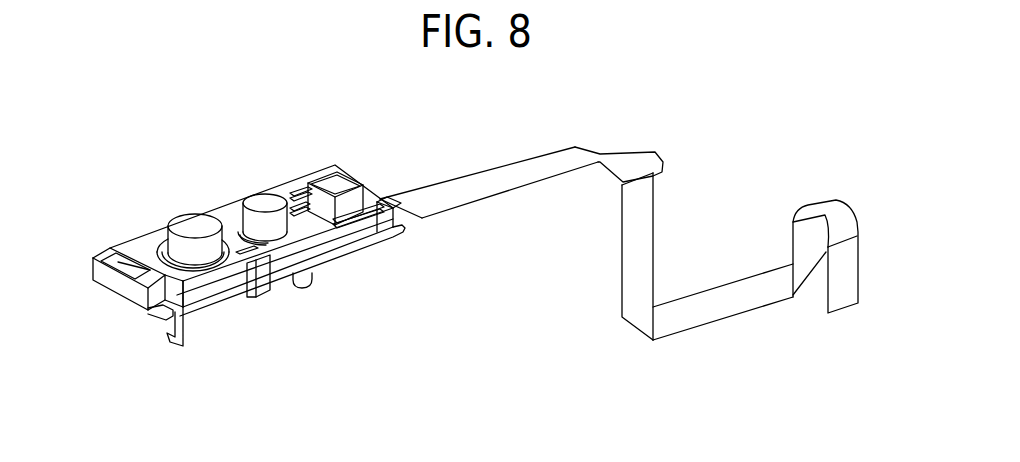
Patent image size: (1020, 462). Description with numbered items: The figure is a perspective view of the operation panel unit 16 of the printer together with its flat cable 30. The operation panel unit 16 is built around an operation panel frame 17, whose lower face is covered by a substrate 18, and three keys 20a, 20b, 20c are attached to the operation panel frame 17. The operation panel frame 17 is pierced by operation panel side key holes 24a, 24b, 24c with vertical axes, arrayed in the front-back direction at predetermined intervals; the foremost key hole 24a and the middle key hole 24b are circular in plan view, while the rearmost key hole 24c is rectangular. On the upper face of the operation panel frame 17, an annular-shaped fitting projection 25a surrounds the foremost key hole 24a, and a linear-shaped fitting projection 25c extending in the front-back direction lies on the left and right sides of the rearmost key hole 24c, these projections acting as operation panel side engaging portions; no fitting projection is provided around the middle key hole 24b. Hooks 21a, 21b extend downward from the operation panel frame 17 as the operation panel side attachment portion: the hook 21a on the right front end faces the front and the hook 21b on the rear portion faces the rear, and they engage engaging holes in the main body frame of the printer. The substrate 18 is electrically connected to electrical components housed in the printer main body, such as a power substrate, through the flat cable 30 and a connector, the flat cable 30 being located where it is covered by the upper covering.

The operation panel unit 16 is at (361, 159).
The operation panel frame 17 is at (225, 220).
The substrate 18 is at (355, 262).
The key 20a is at (190, 220).
The key 20b is at (267, 204).
The key 20c is at (345, 178).
The hook 21a is at (172, 347).
The hook 21b is at (302, 292).
The operation panel side key hole 24a is at (187, 257).
The operation panel side key hole 24b is at (255, 210).
The operation panel side key hole 24c is at (299, 188).
The annular-shaped fitting projection 25a is at (207, 278).
The linear-shaped fitting projection 25c is at (302, 190).
The flat cable 30 is at (678, 313).